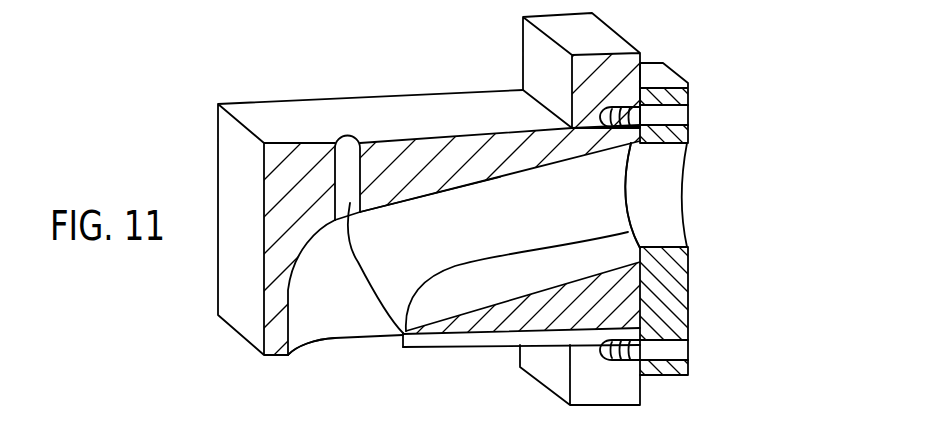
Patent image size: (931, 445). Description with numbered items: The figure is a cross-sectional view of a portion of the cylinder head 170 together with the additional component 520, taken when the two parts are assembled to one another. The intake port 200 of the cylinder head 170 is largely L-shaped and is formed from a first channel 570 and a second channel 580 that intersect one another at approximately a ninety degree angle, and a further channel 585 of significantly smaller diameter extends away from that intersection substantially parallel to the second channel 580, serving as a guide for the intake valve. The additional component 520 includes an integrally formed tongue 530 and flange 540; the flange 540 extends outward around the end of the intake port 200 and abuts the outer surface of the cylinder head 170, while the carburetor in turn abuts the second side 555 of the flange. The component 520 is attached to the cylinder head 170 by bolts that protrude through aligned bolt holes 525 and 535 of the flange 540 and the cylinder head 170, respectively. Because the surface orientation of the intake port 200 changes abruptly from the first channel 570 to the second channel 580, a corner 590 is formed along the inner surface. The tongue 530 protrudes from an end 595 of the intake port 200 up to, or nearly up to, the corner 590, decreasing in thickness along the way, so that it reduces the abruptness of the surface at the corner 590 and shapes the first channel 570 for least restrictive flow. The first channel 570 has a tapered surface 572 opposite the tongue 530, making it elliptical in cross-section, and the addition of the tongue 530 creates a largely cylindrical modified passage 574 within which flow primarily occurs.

The cylinder head 170 is at (342, 93).
The intake port 200 is at (613, 185).
The additional component 520 is at (689, 93).
The bolt holes of the flange 525 is at (688, 121).
The tongue 530 is at (499, 320).
The bolt holes of the cylinder head 535 is at (649, 118).
The flange 540 is at (677, 280).
The second side of the flange 555 is at (690, 258).
The first channel 570 is at (369, 304).
The tapered surface 572 is at (437, 190).
The modified passage 574 is at (498, 203).
The second channel 580 is at (357, 343).
The further channel 585 is at (349, 227).
The corner 590 is at (392, 333).
The end of the intake port 595 is at (637, 241).